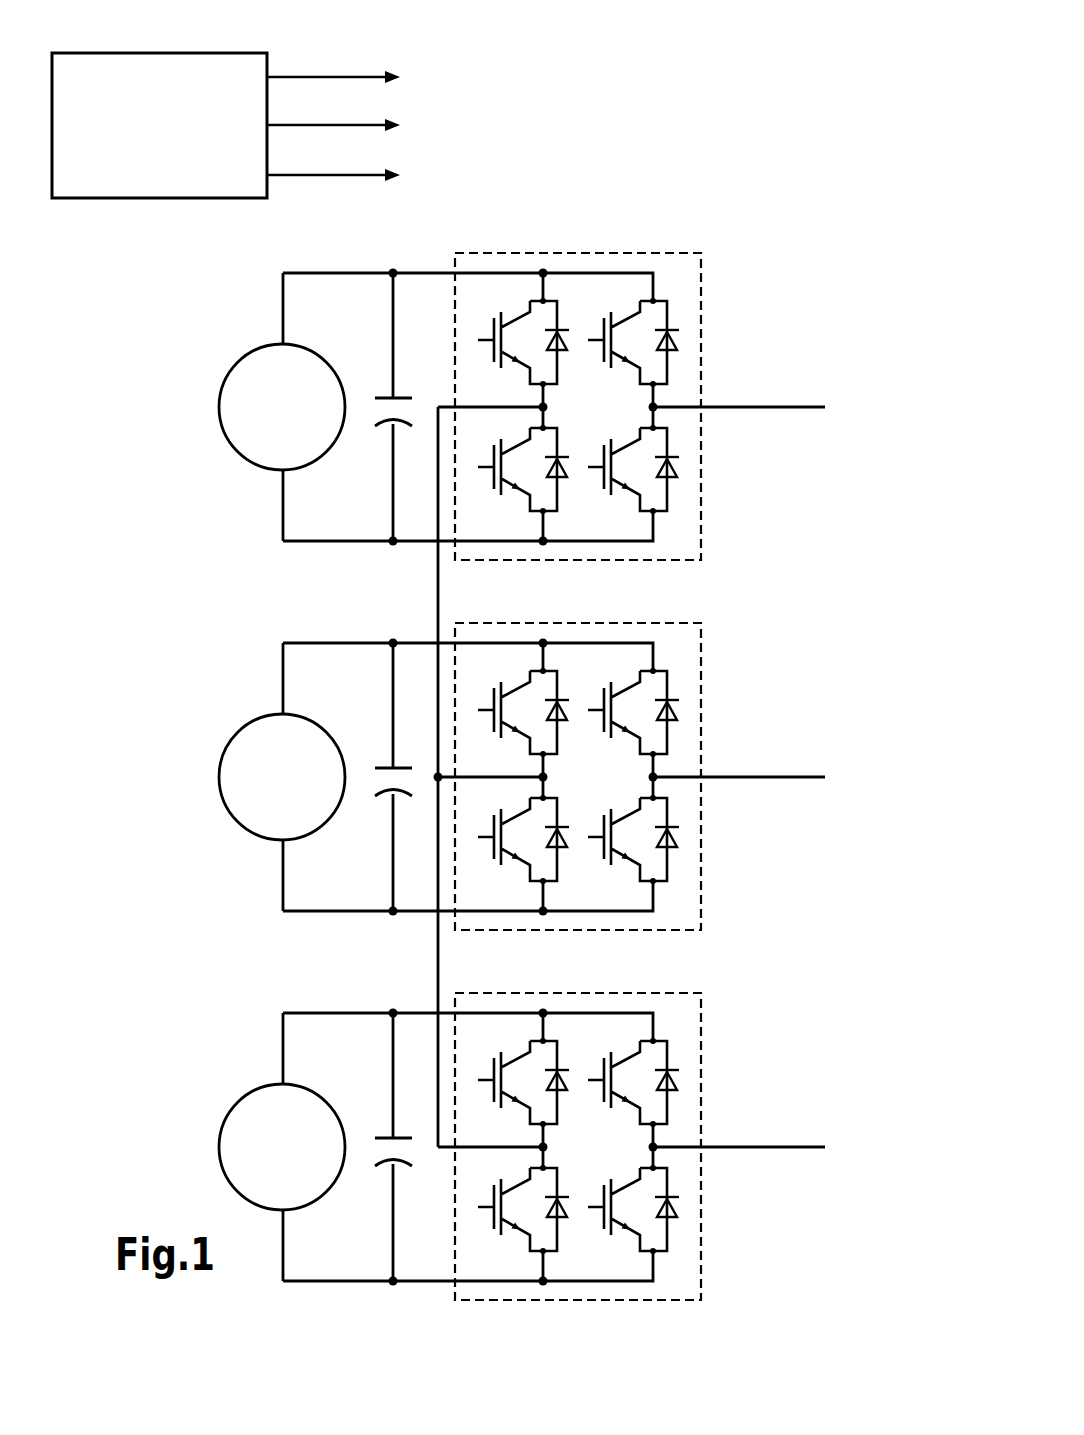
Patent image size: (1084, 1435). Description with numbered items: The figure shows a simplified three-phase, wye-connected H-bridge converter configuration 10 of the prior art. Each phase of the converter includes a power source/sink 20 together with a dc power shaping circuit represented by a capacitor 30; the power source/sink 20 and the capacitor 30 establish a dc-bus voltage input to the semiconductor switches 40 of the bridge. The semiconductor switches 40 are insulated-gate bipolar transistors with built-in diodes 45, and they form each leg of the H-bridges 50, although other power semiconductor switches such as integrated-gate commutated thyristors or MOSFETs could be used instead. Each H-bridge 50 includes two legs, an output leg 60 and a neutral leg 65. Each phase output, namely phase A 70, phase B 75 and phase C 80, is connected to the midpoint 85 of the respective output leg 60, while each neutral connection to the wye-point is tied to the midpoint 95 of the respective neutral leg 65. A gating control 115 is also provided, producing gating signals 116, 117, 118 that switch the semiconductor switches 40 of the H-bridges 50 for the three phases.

The power conversion system 10 is at (695, 163).
The power source/sink 20 is at (221, 386).
The capacitor 30 is at (380, 397).
The semiconductor switches 40 is at (475, 303).
The diodes 45 is at (563, 349).
The H-bridges 50 is at (752, 283).
The output leg 60 is at (698, 372).
The neutral leg 65 is at (480, 391).
The phase A 70 is at (745, 406).
The phase B 75 is at (745, 776).
The phase C 80 is at (745, 1146).
The midpoint 85 is at (656, 409).
The midpoint 95 is at (540, 408).
The gating control 115 is at (147, 53).
The gating signal 116 is at (293, 73).
The gating signal 117 is at (292, 124).
The gating signal 118 is at (288, 173).